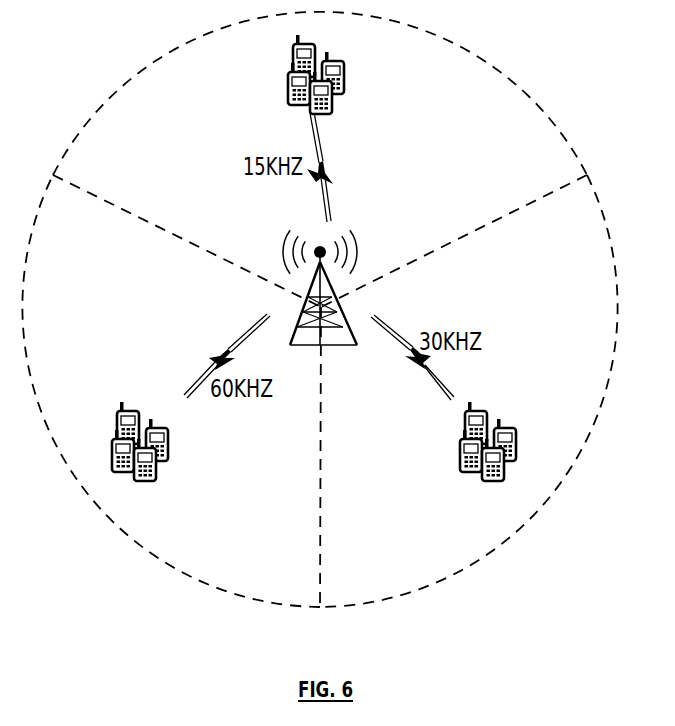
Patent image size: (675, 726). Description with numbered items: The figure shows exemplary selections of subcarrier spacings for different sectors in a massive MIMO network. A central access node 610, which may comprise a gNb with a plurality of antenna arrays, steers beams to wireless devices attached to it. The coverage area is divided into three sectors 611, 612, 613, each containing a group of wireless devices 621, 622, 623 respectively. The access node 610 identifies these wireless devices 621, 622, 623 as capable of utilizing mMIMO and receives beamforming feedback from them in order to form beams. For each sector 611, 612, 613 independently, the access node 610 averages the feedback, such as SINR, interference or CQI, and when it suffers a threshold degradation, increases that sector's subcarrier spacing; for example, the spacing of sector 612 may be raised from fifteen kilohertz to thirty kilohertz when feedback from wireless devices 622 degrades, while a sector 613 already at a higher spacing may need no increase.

The access node 610 is at (303, 319).
The sector 611 is at (177, 116).
The sector 612 is at (440, 560).
The sector 613 is at (72, 364).
The wireless devices 621 is at (362, 97).
The wireless devices 622 is at (504, 392).
The wireless devices 623 is at (174, 478).